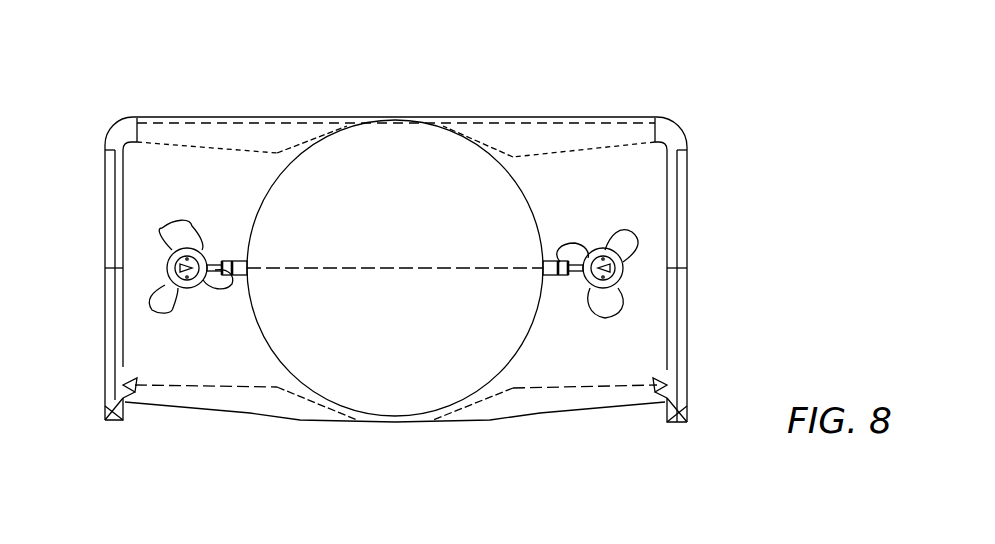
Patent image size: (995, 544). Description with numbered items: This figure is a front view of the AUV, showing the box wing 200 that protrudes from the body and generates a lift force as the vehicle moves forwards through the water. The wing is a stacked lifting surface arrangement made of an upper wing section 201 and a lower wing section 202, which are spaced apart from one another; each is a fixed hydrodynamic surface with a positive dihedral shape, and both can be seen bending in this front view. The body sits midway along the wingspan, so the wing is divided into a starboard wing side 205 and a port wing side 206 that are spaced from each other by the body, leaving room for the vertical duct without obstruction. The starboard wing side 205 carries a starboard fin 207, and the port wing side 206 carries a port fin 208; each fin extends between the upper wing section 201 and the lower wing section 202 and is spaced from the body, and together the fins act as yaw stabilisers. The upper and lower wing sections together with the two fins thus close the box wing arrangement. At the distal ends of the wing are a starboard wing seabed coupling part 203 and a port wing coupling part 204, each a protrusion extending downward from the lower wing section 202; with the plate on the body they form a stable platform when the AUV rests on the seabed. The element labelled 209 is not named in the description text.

The box wing 200 is at (737, 93).
The upper wing section 201 is at (169, 132).
The lower wing section 202 is at (247, 410).
The starboard wing seabed coupling part 203 is at (112, 422).
The port wing coupling part 204 is at (677, 424).
The starboard wing side 205 is at (237, 88).
The port wing side 206 is at (595, 84).
The starboard fin 207 is at (104, 290).
The port fin 208 is at (688, 248).
The drum 209 is at (551, 135).